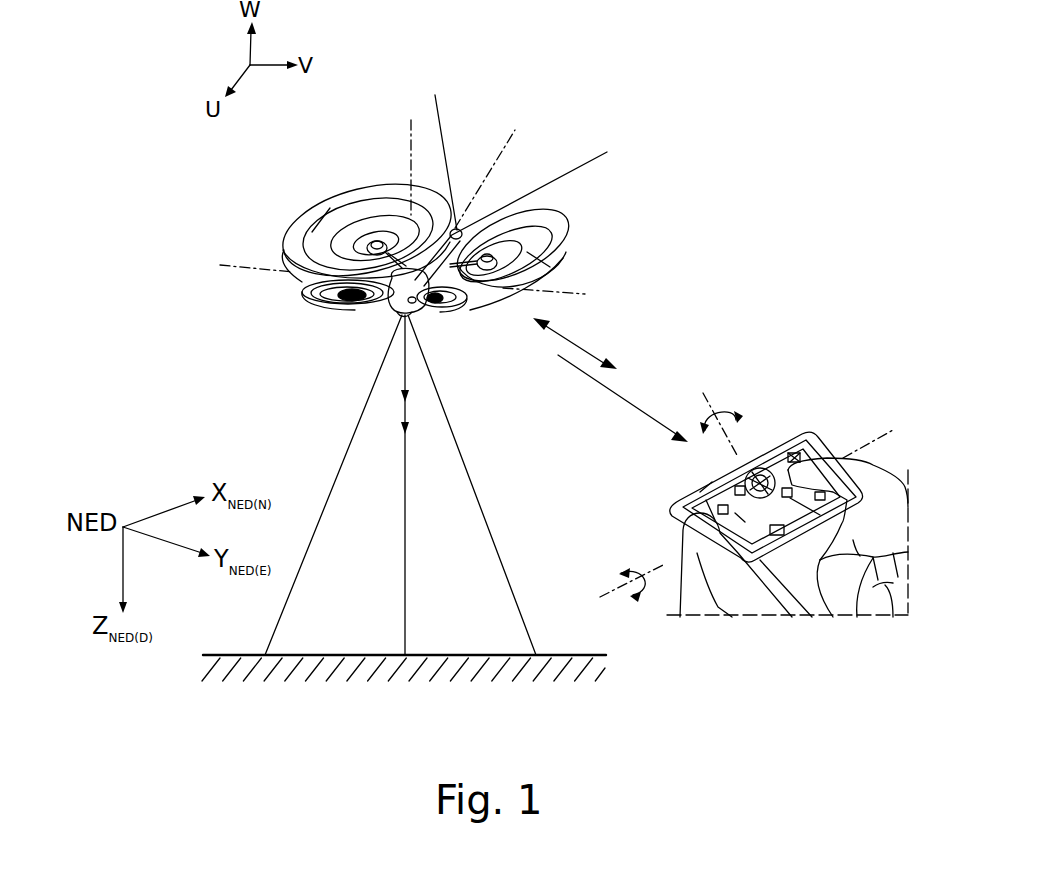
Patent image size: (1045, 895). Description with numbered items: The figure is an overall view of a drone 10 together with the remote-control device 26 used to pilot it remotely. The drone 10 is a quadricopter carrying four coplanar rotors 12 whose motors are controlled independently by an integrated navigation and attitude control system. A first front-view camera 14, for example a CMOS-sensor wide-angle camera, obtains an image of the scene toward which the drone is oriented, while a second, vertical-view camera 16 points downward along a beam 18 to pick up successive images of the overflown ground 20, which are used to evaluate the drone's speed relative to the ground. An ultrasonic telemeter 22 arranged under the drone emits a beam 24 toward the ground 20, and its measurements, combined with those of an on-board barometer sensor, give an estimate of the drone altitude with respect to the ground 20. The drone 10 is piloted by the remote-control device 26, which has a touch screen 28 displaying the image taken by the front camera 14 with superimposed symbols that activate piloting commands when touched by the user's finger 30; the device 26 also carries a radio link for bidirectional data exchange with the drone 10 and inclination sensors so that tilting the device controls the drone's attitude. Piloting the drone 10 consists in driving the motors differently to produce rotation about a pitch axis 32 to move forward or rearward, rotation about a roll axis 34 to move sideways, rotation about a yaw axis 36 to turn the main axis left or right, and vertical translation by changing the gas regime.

The drone 10 is at (427, 217).
The coplanar rotors 12 is at (312, 232).
The front-view camera 14 is at (460, 225).
The vertical-view camera 16 is at (420, 308).
The beam 18 is at (500, 540).
The ground 20 is at (540, 655).
The ultrasonic telemeter 22 is at (400, 312).
The beam 24 is at (410, 480).
The remote-control device 26 is at (810, 418).
The touch screen 28 is at (770, 447).
The user's finger 30 is at (848, 457).
The pitch axis 32 is at (248, 271).
The roll axis 34 is at (502, 147).
The yaw axis 36 is at (410, 138).